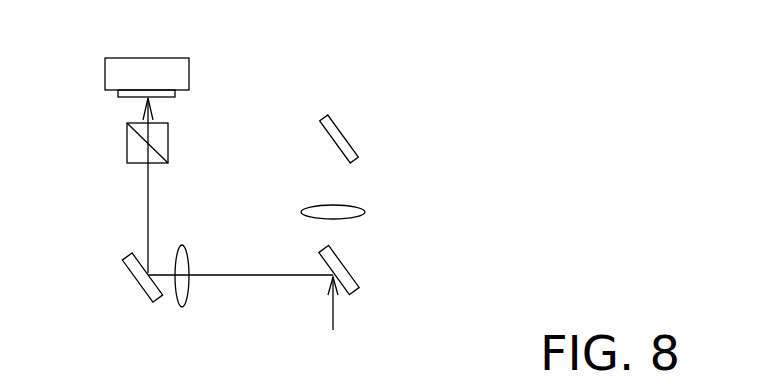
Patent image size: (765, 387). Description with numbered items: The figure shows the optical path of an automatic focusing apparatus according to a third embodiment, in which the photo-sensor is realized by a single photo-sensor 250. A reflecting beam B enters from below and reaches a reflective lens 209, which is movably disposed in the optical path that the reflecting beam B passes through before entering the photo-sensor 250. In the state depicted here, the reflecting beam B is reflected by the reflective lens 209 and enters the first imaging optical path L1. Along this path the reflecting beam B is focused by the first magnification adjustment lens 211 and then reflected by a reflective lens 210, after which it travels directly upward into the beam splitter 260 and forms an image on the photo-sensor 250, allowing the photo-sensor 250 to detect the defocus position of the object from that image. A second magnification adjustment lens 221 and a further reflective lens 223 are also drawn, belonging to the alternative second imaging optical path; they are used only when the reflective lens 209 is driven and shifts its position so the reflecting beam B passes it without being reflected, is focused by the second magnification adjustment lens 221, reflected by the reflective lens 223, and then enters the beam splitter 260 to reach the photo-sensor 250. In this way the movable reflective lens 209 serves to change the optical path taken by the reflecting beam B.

The photo-sensor 250 is at (182, 74).
The beam splitter 260 is at (132, 143).
The first imaging optical path L1 is at (132, 185).
The reflective lens 210 is at (132, 270).
The first magnification adjustment lens 211 is at (183, 308).
The reflective lens 209 is at (322, 260).
The reflective lens 223 is at (345, 143).
The second magnification adjustment lens 221 is at (365, 208).
The reflecting beam B is at (254, 304).